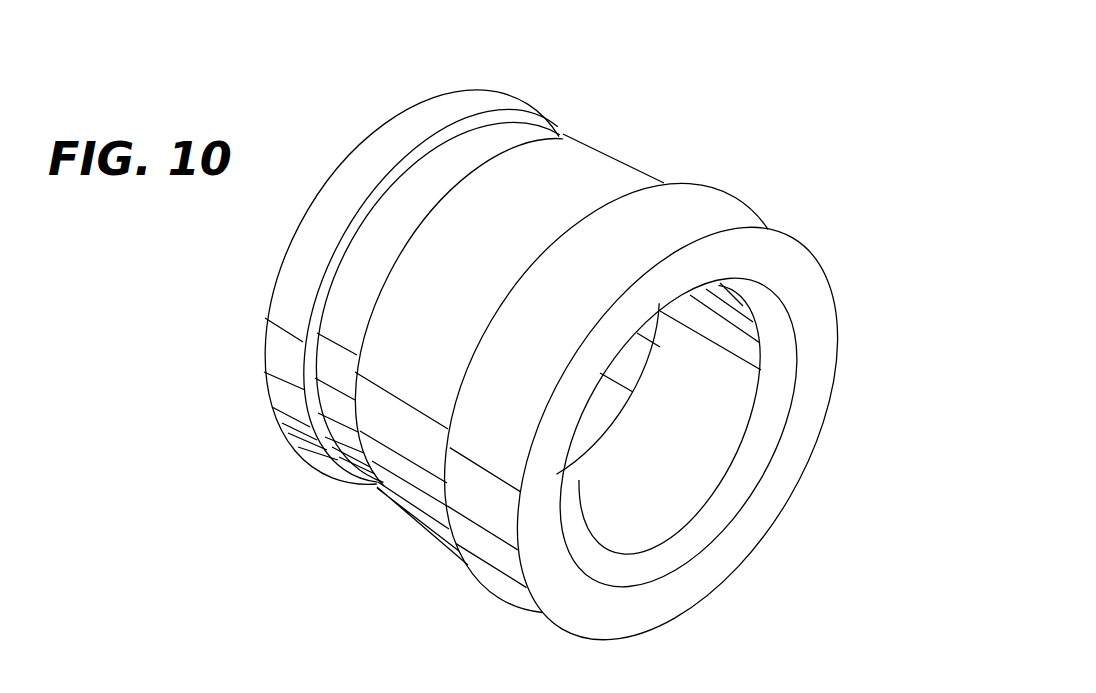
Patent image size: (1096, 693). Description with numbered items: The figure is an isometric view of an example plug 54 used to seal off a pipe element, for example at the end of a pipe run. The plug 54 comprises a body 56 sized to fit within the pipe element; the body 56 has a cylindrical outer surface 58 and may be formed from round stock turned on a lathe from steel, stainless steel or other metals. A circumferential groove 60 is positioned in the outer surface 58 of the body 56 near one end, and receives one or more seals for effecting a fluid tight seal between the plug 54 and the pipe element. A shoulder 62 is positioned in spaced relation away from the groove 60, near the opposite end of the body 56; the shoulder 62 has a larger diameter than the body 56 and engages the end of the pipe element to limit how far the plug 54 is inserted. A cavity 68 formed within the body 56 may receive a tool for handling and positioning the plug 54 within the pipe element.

The plug 54 is at (815, 128).
The body 56 is at (617, 160).
The cylindrical outer surface 58 is at (402, 488).
The circumferential groove 60 is at (477, 133).
The shoulder 62 is at (722, 210).
The cavity 68 is at (708, 445).